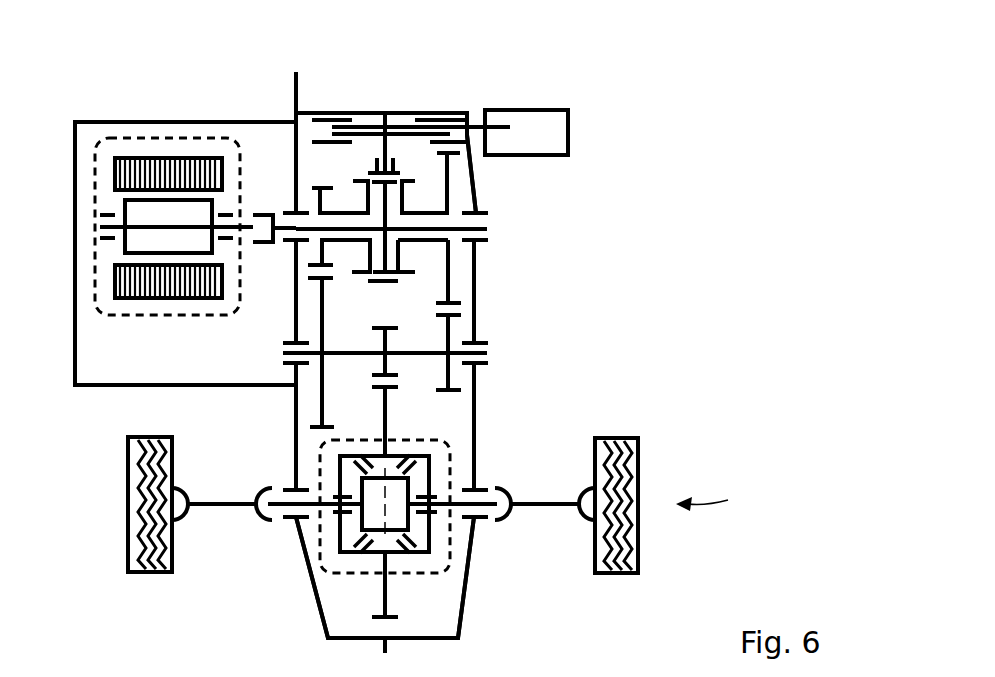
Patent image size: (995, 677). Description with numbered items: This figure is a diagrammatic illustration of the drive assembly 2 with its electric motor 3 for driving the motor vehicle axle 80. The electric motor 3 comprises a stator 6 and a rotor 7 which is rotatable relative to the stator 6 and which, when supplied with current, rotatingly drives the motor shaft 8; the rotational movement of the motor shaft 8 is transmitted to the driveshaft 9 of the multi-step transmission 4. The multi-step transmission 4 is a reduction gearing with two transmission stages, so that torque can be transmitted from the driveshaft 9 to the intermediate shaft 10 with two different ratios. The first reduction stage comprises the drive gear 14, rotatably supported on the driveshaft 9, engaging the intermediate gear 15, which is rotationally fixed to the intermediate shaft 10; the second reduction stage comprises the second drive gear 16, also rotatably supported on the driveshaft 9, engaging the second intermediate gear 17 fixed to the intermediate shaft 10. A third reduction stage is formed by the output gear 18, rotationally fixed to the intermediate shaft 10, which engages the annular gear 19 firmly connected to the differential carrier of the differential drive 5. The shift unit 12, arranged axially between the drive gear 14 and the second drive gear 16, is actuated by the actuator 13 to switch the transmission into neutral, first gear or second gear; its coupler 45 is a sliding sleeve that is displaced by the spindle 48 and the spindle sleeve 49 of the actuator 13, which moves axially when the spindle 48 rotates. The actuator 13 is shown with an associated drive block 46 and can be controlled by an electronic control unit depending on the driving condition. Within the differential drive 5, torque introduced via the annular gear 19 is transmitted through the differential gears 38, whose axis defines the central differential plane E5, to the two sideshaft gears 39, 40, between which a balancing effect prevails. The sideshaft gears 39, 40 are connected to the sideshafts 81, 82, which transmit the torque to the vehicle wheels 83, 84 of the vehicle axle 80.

The drive assembly 2 is at (391, 76).
The electric motor 3 is at (175, 132).
The multi-step transmission 4 is at (397, 173).
The differential drive 5 is at (445, 570).
The stator 6 is at (203, 165).
The rotor 7 is at (143, 215).
The motor shaft 8 is at (165, 230).
The driveshaft 9 is at (455, 232).
The intermediate shaft 10 is at (452, 346).
The shift unit 12 is at (378, 170).
The actuator 13 is at (498, 95).
The drive gear 14 is at (303, 197).
The intermediate gear 15 is at (321, 410).
The second drive gear 16 is at (450, 193).
The second intermediate gear 17 is at (450, 316).
The output gear 18 is at (385, 363).
The annular gear 19 is at (388, 415).
The differential gears 38 is at (380, 530).
The sideshaft gear 39 is at (356, 523).
The sideshaft gear 40 is at (409, 491).
The coupler 45 is at (409, 158).
The actuator 46 is at (555, 138).
The spindle 48 is at (475, 130).
The spindle sleeve 49 is at (368, 152).
The motor vehicle axle 80 is at (724, 511).
The sideshaft 81 is at (215, 508).
The sideshaft 82 is at (547, 498).
The vehicle wheel 83 is at (128, 462).
The vehicle wheel 84 is at (640, 457).
The central differential plane E5 is at (400, 542).